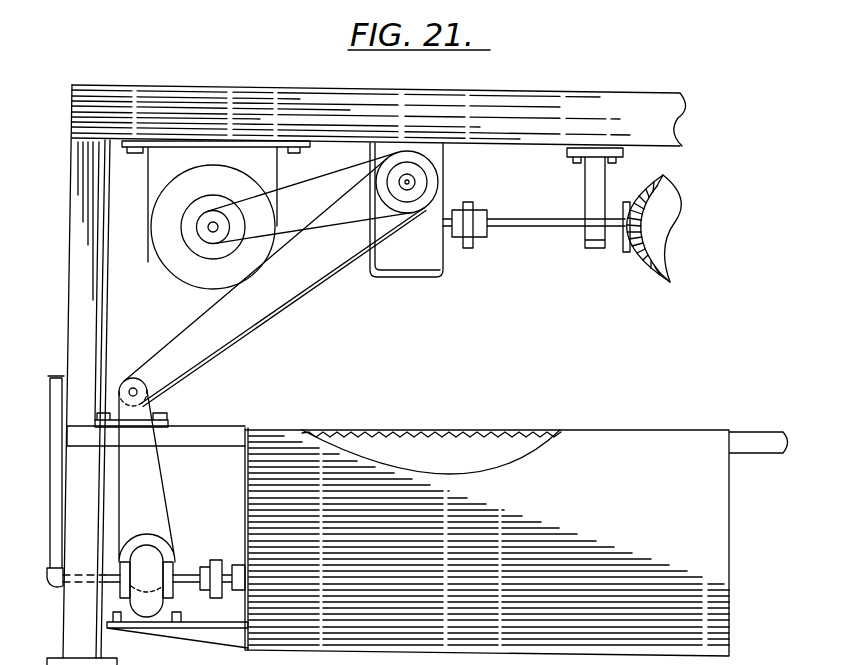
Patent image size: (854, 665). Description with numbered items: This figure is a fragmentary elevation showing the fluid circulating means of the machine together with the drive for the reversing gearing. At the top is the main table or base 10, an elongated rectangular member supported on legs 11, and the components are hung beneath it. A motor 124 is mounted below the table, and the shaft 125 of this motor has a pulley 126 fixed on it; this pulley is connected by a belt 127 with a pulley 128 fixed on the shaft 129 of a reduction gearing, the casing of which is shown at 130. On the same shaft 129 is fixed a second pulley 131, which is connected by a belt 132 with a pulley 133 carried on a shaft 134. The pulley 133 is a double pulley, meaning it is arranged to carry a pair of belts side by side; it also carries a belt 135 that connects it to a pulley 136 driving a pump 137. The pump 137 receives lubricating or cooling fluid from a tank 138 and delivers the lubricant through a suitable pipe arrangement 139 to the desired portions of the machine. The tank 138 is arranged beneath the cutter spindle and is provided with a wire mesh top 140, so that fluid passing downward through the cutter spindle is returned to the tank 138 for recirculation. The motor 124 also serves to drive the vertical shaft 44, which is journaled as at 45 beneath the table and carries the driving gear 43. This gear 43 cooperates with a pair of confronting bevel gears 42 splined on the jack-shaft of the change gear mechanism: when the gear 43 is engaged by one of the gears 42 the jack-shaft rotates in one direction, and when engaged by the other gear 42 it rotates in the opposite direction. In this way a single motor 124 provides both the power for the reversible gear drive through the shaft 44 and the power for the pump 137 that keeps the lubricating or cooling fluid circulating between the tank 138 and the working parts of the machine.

The main table or base 10 is at (656, 104).
The legs 11 is at (77, 263).
The bevel gears 42 is at (661, 180).
The driving gear 43 is at (630, 254).
The vertical shaft 44 is at (553, 229).
The journal 45 is at (593, 186).
The motor 124 is at (200, 283).
The motor shaft 125 is at (207, 229).
The pulley 126 is at (209, 212).
The belt 127 is at (293, 181).
The pulley 128 is at (433, 166).
The shaft of reduction gearing 129 is at (406, 182).
The casing of reduction gearing 130 is at (422, 266).
The second pulley 131 is at (404, 197).
The belt 132 is at (295, 290).
The double pulley 133 is at (180, 377).
The shaft 134 is at (138, 392).
The belt 135 is at (160, 493).
The pulley 136 is at (148, 537).
The pump 137 is at (155, 560).
The tank 138 is at (270, 450).
The pipe arrangement 139 is at (50, 513).
The wire mesh top 140 is at (416, 435).